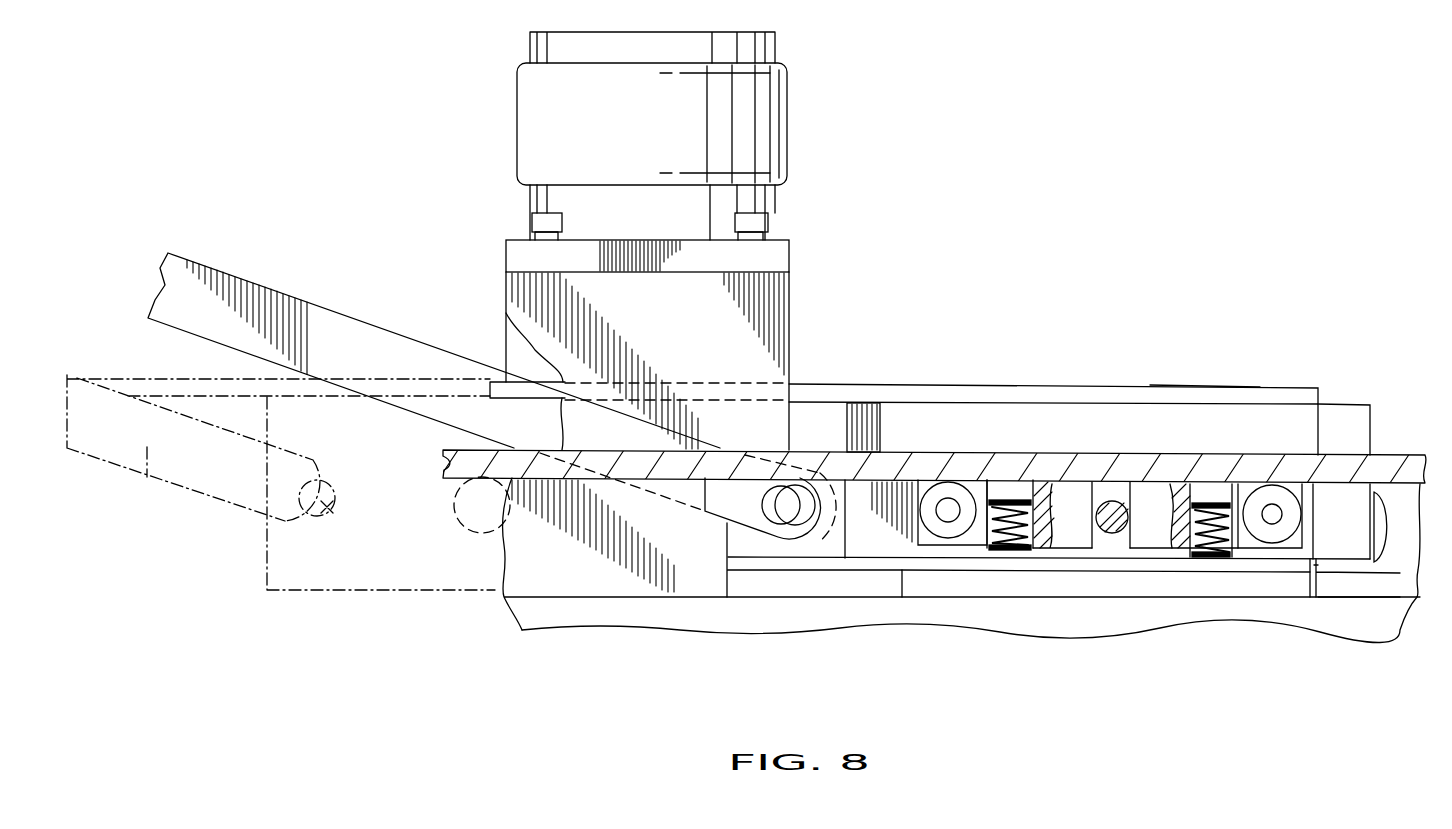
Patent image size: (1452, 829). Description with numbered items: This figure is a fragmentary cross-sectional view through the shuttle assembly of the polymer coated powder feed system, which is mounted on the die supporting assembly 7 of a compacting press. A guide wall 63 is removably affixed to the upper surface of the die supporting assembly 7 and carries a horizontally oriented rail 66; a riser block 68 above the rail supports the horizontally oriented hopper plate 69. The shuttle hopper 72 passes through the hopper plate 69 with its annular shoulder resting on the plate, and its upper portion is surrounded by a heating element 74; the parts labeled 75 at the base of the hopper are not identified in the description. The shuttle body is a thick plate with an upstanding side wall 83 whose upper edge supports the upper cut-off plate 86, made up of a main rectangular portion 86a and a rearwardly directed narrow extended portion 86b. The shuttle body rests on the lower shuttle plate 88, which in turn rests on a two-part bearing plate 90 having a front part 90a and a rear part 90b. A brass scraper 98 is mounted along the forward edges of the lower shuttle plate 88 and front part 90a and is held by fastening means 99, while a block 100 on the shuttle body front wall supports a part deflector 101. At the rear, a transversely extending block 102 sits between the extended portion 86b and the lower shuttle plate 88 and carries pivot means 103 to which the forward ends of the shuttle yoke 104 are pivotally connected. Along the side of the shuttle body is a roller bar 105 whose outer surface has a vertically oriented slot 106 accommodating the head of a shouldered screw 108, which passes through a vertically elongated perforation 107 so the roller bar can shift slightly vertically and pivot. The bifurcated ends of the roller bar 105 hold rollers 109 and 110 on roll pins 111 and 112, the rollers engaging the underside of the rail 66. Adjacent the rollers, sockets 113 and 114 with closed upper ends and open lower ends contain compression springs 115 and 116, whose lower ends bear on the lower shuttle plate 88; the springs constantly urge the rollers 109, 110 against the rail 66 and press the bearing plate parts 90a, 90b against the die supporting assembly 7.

The hopper 72 is at (781, 48).
The heating element 74 is at (789, 101).
The motor clamp 75 is at (532, 222).
The hopper plate 69 is at (775, 258).
The riser block 68 is at (770, 302).
The upper cut-off plate 86 is at (1292, 397).
The main rectangular portion 86a is at (1198, 395).
The rearwardly directed narrow extended portion 86b is at (806, 388).
The block 100 is at (1340, 415).
The part deflector 101 is at (1397, 533).
The shuttle yoke 104 is at (398, 380).
The pivot means 103 is at (327, 507).
The transversely extending block 102 is at (293, 568).
The guide wall 63 is at (580, 546).
The side wall 83 is at (878, 519).
The lower shuttle plate 88 is at (743, 563).
The rear part 90b is at (740, 585).
The front part 90a is at (1257, 588).
The bearing plate 90 is at (1280, 587).
The brass scraper 98 is at (1320, 587).
The fastening means 99 is at (1316, 570).
The die supporting assembly 7 is at (1392, 623).
The roll pin 112 is at (957, 487).
The roller 110 is at (948, 500).
The compression spring 116 is at (1015, 557).
The socket 114 is at (1050, 547).
The slot 106 is at (1098, 540).
The vertically elongated perforation 107 is at (1112, 533).
The shouldered screw 108 is at (1112, 500).
The roller bar 105 is at (1145, 503).
The socket 113 is at (1173, 542).
The compression spring 115 is at (1207, 550).
The roller 109 is at (1283, 497).
The roll pin 111 is at (1273, 503).
The rail 66 is at (1350, 473).